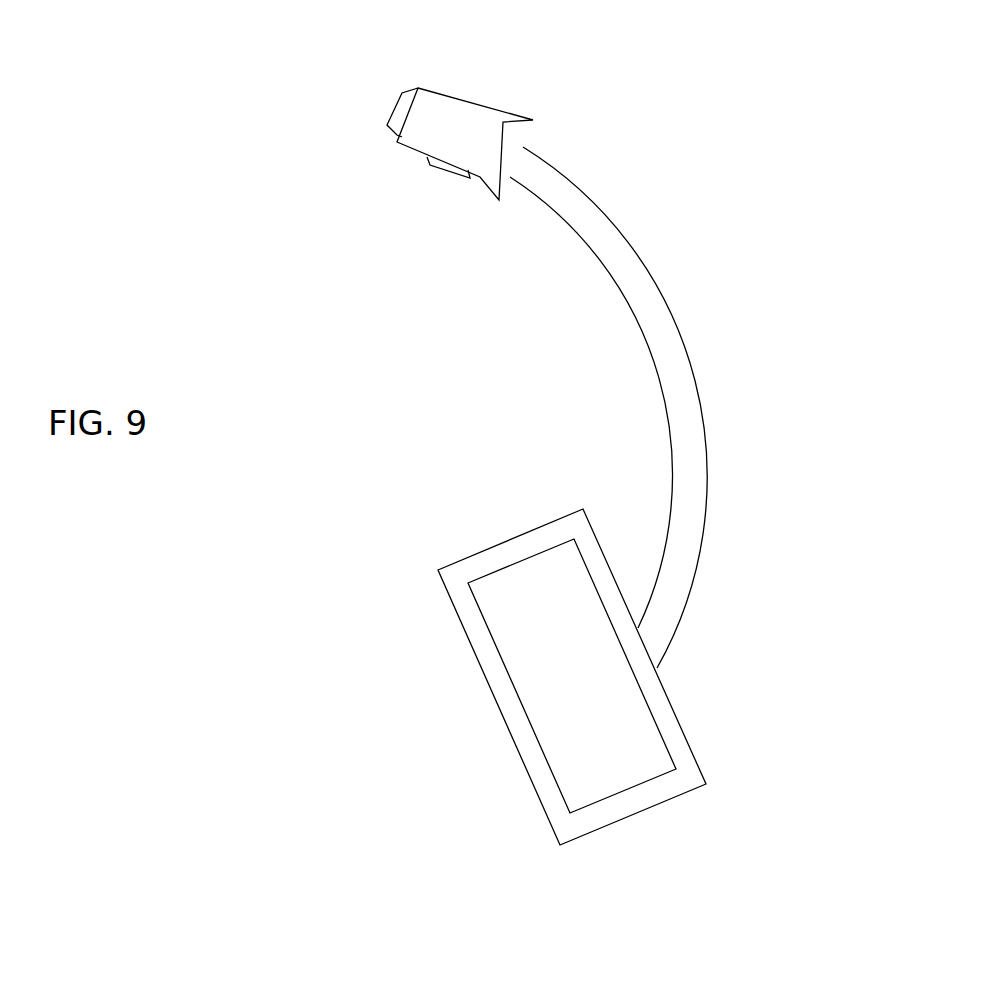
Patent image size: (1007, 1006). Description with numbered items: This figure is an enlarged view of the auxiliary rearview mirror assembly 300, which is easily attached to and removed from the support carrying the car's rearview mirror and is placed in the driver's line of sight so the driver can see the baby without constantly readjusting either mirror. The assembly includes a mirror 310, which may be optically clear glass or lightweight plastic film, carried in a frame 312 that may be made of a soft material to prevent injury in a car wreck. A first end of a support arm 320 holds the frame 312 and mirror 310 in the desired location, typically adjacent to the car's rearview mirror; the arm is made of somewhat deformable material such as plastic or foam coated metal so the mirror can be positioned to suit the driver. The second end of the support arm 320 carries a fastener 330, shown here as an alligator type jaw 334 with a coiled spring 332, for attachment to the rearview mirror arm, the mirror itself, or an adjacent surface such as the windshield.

The auxiliary rearview mirror assembly 300 is at (343, 599).
The mirror 310 is at (579, 690).
The frame 312 is at (525, 548).
The support arm 320 is at (695, 350).
The fastener 330 is at (355, 202).
The coiled spring 332 is at (448, 180).
The alligator type jaw 334 is at (390, 107).